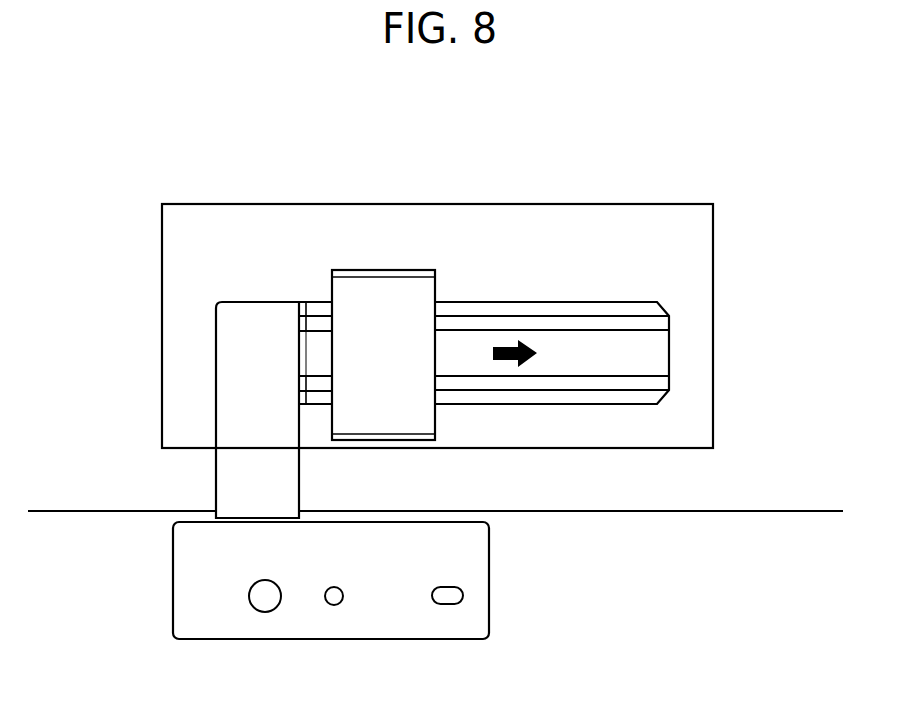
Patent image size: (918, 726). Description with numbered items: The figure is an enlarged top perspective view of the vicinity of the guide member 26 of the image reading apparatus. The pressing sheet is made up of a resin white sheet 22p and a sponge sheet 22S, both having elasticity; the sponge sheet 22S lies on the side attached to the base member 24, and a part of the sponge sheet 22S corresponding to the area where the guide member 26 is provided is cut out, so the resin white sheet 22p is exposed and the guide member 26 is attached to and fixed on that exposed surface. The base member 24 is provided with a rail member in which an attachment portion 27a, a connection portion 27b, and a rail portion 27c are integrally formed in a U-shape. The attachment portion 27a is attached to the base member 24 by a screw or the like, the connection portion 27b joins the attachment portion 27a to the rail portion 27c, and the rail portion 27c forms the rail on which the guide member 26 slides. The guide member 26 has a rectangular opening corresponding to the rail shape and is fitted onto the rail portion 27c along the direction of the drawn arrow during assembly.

The sponge sheet 22S is at (633, 115).
The resin white sheet 22p is at (622, 263).
The guide member 26 is at (375, 315).
The attachment portion 27a is at (305, 628).
The connection portion 27b is at (250, 430).
The rail portion 27c is at (568, 397).
The base member 24 is at (596, 593).